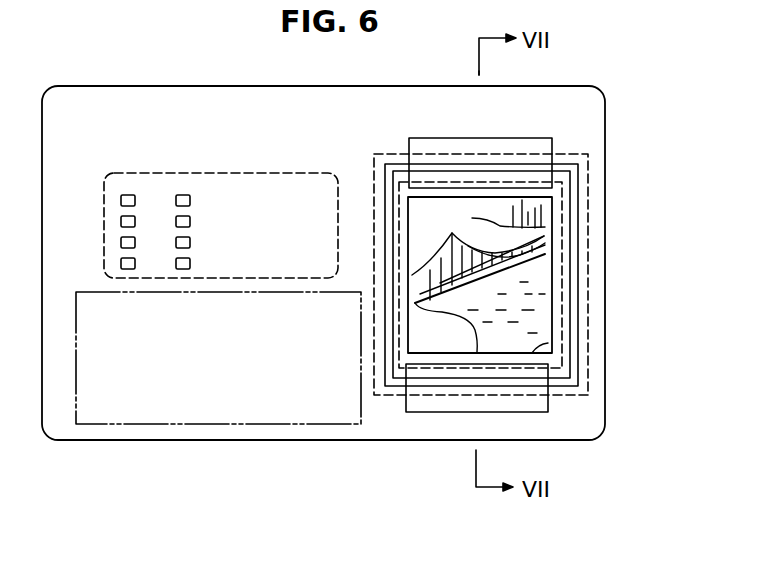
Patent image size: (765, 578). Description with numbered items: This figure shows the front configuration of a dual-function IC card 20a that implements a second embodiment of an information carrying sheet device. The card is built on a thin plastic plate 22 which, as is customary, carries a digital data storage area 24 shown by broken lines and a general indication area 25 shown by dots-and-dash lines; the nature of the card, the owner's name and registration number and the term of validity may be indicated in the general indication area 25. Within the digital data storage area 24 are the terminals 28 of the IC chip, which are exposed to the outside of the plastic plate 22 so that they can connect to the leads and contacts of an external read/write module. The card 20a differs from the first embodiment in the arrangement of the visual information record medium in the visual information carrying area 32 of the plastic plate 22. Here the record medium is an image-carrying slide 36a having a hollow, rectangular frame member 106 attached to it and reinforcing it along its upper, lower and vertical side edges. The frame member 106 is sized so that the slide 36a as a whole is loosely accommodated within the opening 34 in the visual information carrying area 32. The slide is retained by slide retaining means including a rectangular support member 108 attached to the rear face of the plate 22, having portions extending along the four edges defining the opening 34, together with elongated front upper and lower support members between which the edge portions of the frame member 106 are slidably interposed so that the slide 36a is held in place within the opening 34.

The dual-function IC card 20a is at (117, 80).
The plastic plate 22 is at (308, 121).
The digital data storage area 24 is at (218, 172).
The terminals 28 is at (175, 221).
The general indication area 25 is at (244, 369).
The visual information carrying area 32 is at (580, 120).
The opening 34 is at (569, 243).
The frame member 106 is at (532, 353).
The rear support member 108 is at (588, 188).
The image-carrying slide 36a is at (392, 395).